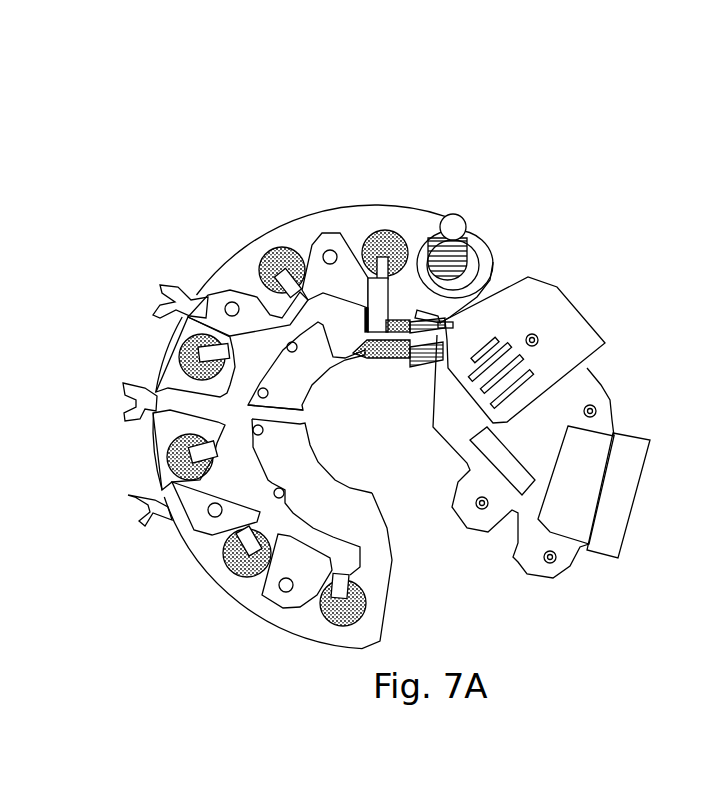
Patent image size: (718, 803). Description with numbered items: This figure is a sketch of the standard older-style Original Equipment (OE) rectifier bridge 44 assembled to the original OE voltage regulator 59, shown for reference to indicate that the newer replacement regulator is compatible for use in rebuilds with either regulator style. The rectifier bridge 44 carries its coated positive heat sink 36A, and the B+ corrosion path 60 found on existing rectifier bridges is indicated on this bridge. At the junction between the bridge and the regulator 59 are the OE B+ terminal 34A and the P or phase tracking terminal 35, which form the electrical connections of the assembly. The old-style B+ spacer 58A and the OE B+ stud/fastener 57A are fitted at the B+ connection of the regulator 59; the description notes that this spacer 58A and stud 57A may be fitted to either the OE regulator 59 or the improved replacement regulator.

The Original Equipment (OE) rectifier bridge 44 is at (220, 208).
The B+ corrosion path on existing rectifier bridges 60 is at (270, 250).
The coated positive heat sink 36A is at (355, 230).
The B+ spacer on original equipment regulator 58A is at (420, 235).
The B+ stud/fastener on Original equipment (OE) 57A is at (455, 214).
The P or Phase tracking terminal 35 is at (453, 322).
The Original Equipment Voltage regulator 59 is at (607, 298).
The Original Equipment (OE) B+ terminal 34A is at (403, 360).